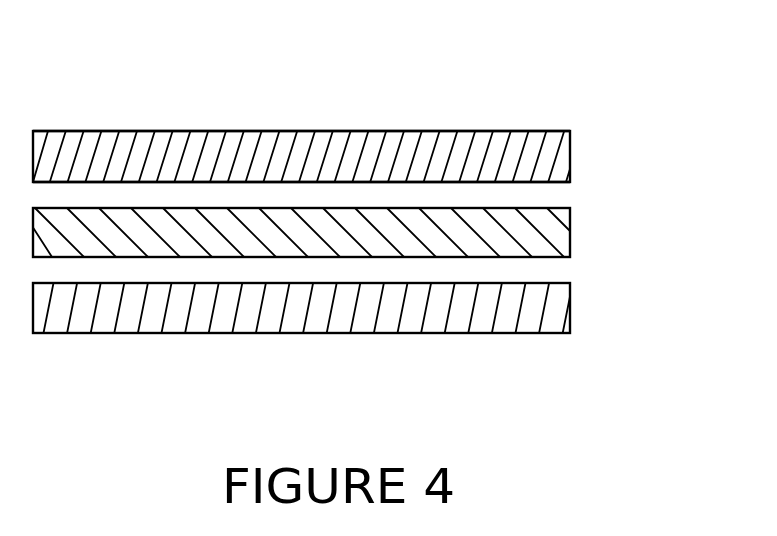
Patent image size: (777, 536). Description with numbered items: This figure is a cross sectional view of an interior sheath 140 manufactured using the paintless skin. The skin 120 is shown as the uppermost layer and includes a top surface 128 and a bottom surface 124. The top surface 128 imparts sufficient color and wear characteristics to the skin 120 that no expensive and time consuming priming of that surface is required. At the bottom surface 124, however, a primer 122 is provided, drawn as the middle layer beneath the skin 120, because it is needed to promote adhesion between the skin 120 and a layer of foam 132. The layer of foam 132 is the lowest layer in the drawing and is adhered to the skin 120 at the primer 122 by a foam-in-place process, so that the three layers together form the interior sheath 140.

The interior sheath 140 is at (462, 93).
The skin 120 is at (570, 158).
The top surface 128 is at (537, 131).
The bottom surface 124 is at (540, 182).
The primer 122 is at (570, 240).
The layer of foam 132 is at (570, 305).